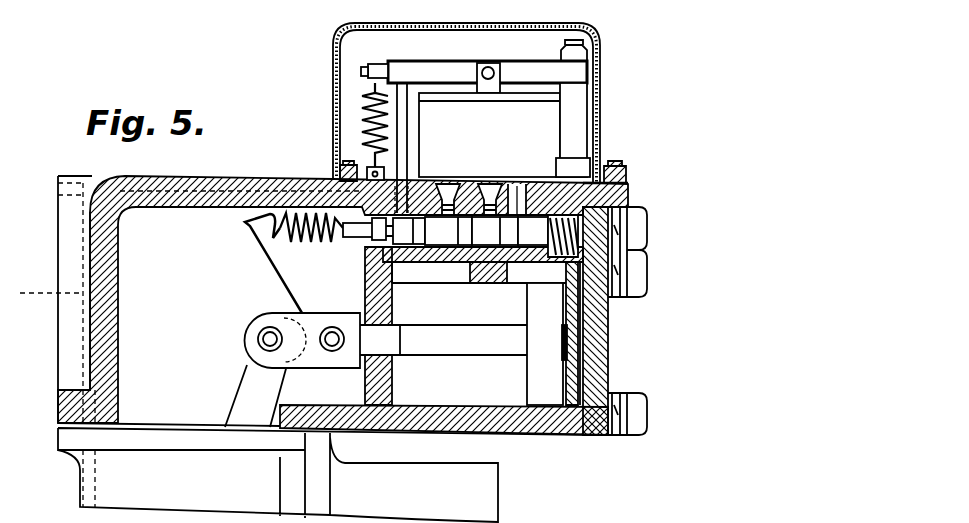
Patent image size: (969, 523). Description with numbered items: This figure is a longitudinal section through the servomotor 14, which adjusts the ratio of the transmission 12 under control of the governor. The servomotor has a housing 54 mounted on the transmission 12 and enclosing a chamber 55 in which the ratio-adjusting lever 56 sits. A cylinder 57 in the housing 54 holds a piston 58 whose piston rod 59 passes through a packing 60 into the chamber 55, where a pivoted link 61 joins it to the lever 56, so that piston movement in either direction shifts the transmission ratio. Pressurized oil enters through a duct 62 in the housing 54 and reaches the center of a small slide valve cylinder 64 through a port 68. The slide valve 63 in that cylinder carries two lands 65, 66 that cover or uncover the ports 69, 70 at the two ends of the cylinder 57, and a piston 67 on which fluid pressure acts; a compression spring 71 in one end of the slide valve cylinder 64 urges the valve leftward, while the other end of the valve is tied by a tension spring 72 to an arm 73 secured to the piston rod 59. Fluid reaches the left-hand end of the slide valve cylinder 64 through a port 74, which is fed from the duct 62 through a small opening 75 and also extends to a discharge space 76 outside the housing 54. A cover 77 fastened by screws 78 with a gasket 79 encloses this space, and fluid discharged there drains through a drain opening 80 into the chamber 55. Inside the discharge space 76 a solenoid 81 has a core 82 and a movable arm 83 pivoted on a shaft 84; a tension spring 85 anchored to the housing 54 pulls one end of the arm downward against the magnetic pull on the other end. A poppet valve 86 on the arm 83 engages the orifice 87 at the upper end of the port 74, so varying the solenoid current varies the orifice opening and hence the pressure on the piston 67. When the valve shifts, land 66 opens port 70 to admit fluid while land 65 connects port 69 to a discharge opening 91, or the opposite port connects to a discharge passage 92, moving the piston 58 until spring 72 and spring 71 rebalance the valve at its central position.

The transmission 12 is at (80, 466).
The servomotor 14 is at (234, 166).
The housing 54 is at (247, 181).
The chamber 55 is at (172, 253).
The ratio-adjusting lever 56 is at (238, 364).
The cylinder 57 is at (483, 405).
The piston 58 is at (530, 306).
The piston rod 59 is at (452, 324).
The packing 60 is at (350, 320).
The pivoted link 61 is at (277, 325).
The duct 62 is at (194, 180).
The slide valve 63 is at (360, 238).
The slide valve cylinder 64 is at (440, 266).
The land 65 is at (448, 231).
The land 66 is at (548, 236).
The piston 67 is at (405, 231).
The port 68 is at (495, 231).
The port 69 is at (460, 270).
The port 70 is at (526, 274).
The compression spring 71 is at (620, 195).
The tension spring 72 is at (296, 243).
The arm 73 is at (264, 257).
The port 74 is at (373, 229).
The small opening 75 is at (414, 188).
The discharge space 76 is at (374, 58).
The cover 77 is at (601, 60).
The screws 78 is at (345, 165).
The gasket 79 is at (622, 183).
The drain opening 80 is at (367, 176).
The solenoid 81 is at (440, 100).
The core 82 is at (590, 122).
The movable arm 83 is at (543, 54).
The shaft 84 is at (486, 67).
The tension spring 85 is at (365, 112).
The poppet valve 86 is at (408, 133).
The orifice 87 is at (414, 180).
The discharge opening 91 is at (447, 184).
The discharge passage 92 is at (526, 184).